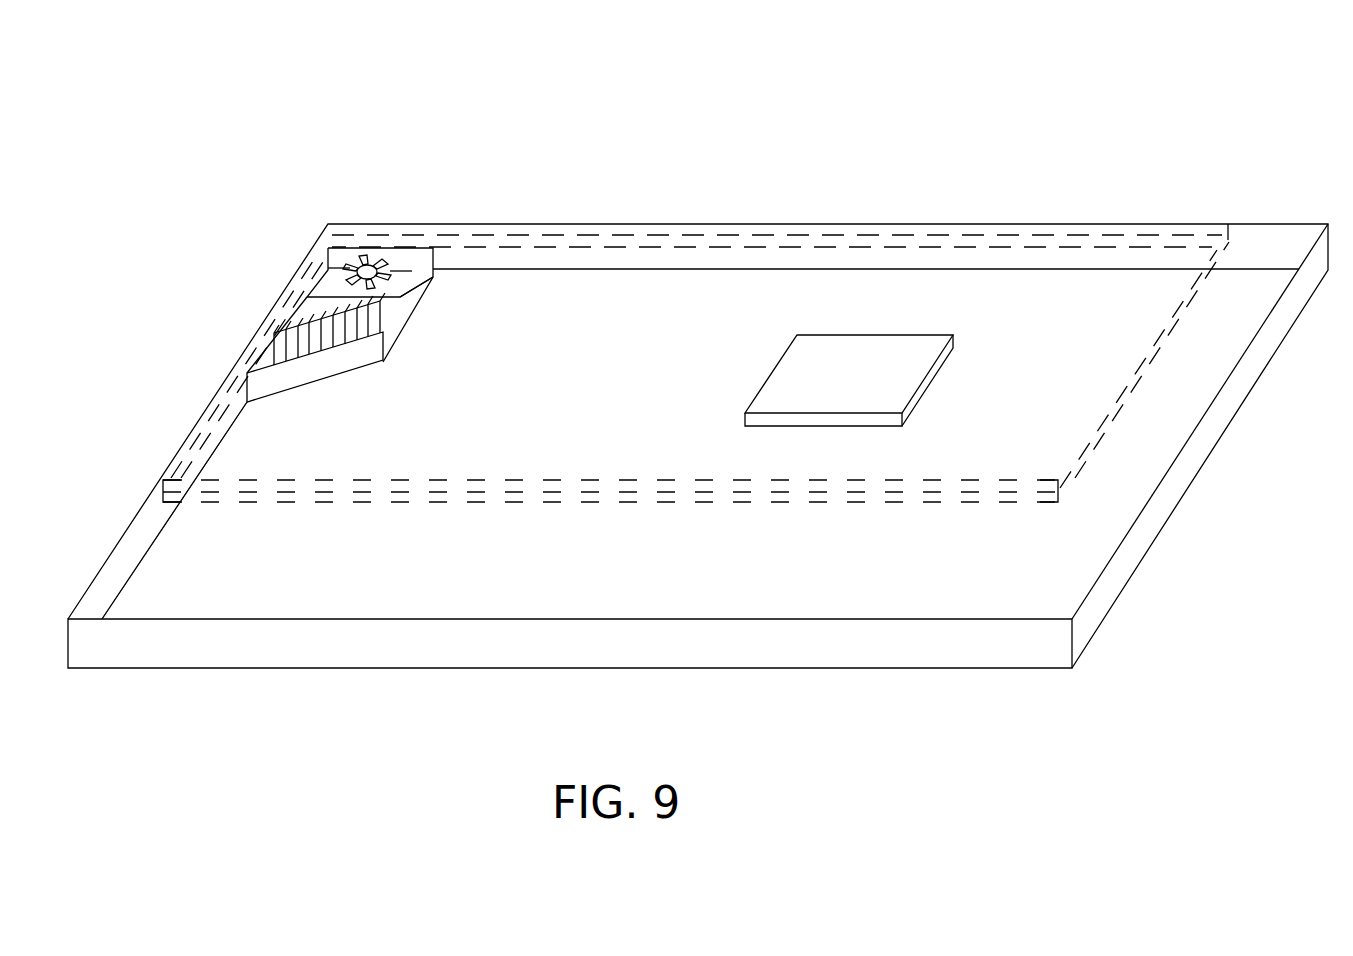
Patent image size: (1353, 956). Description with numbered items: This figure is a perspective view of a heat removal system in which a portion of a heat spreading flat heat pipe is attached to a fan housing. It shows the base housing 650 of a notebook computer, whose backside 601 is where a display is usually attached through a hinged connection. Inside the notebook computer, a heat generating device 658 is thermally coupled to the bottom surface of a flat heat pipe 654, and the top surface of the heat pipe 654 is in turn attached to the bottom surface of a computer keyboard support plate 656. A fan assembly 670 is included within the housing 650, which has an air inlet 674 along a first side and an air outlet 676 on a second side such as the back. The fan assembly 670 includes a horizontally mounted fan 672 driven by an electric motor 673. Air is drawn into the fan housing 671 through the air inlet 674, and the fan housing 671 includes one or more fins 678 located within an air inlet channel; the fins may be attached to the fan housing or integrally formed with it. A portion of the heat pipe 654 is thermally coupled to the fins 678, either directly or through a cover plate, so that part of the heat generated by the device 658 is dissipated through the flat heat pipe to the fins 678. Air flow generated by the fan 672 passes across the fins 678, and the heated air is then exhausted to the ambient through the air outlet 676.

The backside 601 is at (1278, 223).
The base housing 650 is at (853, 647).
The flat heat pipe 654 is at (742, 498).
The computer keyboard support plate 656 is at (843, 483).
The heat generating device 658 is at (872, 357).
The fan assembly 670 is at (272, 200).
The fan housing 671 is at (402, 317).
The fan 672 is at (380, 258).
The electric motor 673 is at (355, 272).
The air inlet 674 is at (263, 358).
The air outlet 676 is at (412, 260).
The fins 678 is at (327, 315).